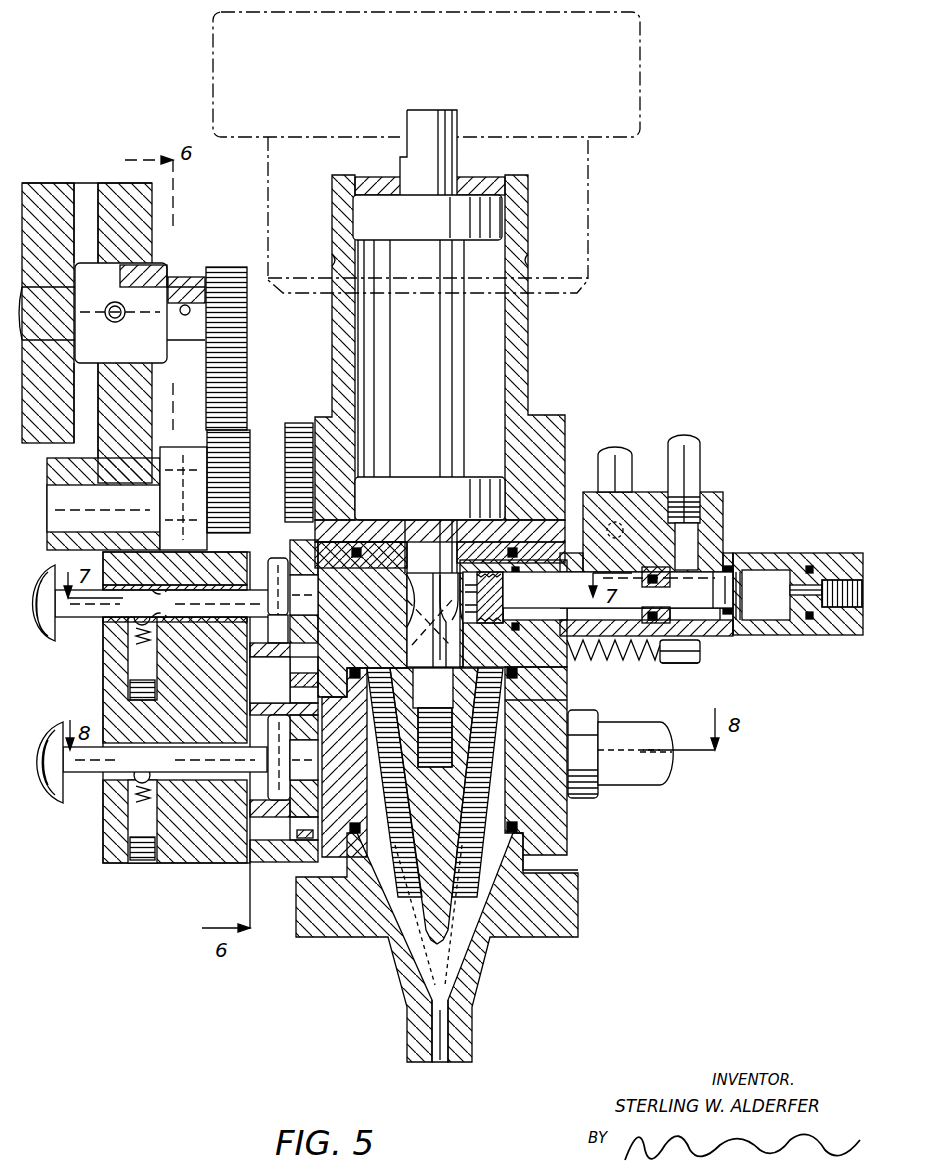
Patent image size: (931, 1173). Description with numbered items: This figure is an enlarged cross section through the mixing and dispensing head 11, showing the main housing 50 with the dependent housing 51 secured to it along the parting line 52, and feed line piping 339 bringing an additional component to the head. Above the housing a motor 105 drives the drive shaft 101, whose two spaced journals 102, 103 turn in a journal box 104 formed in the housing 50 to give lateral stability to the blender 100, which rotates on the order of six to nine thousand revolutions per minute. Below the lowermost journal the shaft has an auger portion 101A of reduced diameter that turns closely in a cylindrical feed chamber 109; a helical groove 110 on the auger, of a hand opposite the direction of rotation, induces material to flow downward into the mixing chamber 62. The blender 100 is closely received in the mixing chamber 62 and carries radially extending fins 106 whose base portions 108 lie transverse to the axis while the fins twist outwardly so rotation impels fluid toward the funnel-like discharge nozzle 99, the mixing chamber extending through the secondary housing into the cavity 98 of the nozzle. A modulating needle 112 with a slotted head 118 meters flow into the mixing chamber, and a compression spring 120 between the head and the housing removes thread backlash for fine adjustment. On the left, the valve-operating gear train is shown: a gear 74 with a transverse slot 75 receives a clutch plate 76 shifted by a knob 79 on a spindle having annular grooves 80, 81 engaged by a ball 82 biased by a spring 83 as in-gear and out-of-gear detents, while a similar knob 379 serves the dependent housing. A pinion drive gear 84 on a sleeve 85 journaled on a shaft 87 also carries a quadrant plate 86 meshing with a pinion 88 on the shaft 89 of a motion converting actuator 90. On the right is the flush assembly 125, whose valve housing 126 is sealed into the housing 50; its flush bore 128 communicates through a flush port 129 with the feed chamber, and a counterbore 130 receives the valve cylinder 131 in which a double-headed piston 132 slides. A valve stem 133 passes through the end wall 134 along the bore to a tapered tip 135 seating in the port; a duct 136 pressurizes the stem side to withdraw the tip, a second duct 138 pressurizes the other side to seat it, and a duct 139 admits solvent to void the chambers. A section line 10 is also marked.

The extrusion apparatus 10 is at (468, 795).
The mixing and dispensing head 11 is at (148, 882).
The main housing 50 is at (553, 685).
The dependent housing 51 is at (563, 843).
The parting line 52 is at (565, 703).
The mixing chamber 62 is at (358, 730).
The gear 74 is at (300, 663).
The transverse slot 75 is at (260, 645).
The clutch plate 76 is at (267, 628).
The knob 79 is at (36, 645).
The annular groove 80 is at (140, 590).
The annular groove 81 is at (157, 614).
The ball 82 is at (127, 622).
The spring 83 is at (146, 640).
The pinion drive gear 84 is at (300, 424).
The sleeve 85 is at (262, 457).
The quadrant plate 86 is at (243, 390).
The shaft 87 is at (112, 406).
The pinion 88 is at (222, 268).
The actuator shaft 89 is at (185, 305).
The motion converting actuator 90 is at (48, 178).
The cavity 98 is at (445, 972).
The discharge nozzle 99 is at (360, 928).
The blender 100 is at (435, 806).
The drive shaft 101 is at (411, 358).
The auger portion 101A is at (405, 625).
The journal 102 is at (430, 498).
The journal 103 is at (427, 217).
The journal box 104 is at (522, 362).
The motor 105 is at (426, 152).
The fins 106 is at (500, 760).
The base portion 108 is at (368, 788).
The feed chamber 109 is at (410, 583).
The helical groove 110 is at (405, 606).
The modulating needle 112 is at (675, 668).
The head 118 is at (700, 650).
The compression spring 120 is at (582, 660).
The flush assembly 125 is at (743, 534).
The valve housing 126 is at (712, 492).
The flush bore 128 is at (513, 613).
The flush port 129 is at (484, 615).
The counterbore 130 is at (654, 567).
The valve cylinder 131 is at (773, 560).
The double-headed piston 132 is at (742, 608).
The valve stem 133 is at (618, 590).
The end wall 134 is at (667, 573).
The tapered tip 135 is at (535, 598).
The duct 136 is at (693, 535).
The second duct 138 is at (818, 575).
The duct 139 is at (622, 447).
The feed line piping 339 is at (648, 772).
The knob 379 is at (48, 797).